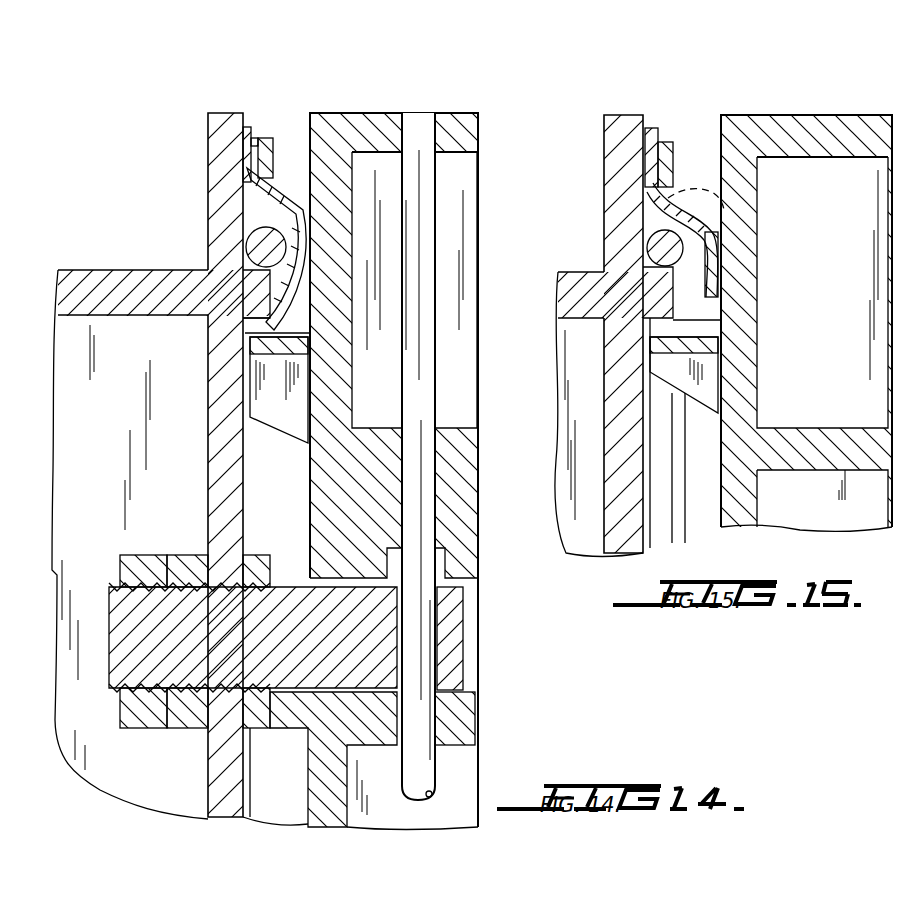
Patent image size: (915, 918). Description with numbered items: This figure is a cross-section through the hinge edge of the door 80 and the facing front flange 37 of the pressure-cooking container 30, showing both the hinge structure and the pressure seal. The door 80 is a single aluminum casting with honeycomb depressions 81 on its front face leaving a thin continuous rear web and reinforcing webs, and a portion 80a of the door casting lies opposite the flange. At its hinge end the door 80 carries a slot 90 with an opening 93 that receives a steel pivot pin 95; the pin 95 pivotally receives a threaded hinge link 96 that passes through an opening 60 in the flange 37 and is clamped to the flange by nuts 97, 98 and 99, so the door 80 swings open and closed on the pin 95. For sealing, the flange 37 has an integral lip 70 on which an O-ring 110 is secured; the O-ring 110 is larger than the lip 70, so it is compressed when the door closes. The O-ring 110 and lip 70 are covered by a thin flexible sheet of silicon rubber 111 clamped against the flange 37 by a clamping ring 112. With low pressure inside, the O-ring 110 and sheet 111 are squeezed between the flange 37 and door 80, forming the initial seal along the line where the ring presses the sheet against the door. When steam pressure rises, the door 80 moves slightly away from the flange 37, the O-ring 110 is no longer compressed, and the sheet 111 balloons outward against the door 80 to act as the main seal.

In FIG. 14, the container 30 is at (122, 270).
In FIG. 15, the container 30 is at (560, 298).
In FIG. 14, the front flange 37 is at (208, 170).
In FIG. 15, the front flange 37 is at (604, 195).
In FIG. 14, the opening 60 is at (190, 595).
In FIG. 14, the lip 70 is at (247, 320).
In FIG. 15, the lip 70 is at (690, 327).
In FIG. 14, the door 80 is at (500, 193).
In FIG. 15, the door 80 is at (782, 111).
In FIG. 14, the housing portion 80a is at (282, 360).
In FIG. 15, the housing portion 80a is at (705, 357).
In FIG. 14, the depressions 81 is at (457, 428).
In FIG. 15, the depressions 81 is at (853, 160).
In FIG. 14, the slot 90 is at (317, 695).
In FIG. 14, the opening 93 is at (432, 726).
In FIG. 14, the steel pivot pin 95 is at (435, 293).
In FIG. 14, the threaded hinge link 96 is at (299, 649).
In FIG. 14, the nut 97 is at (250, 728).
In FIG. 14, the nut 98 is at (195, 728).
In FIG. 14, the nut 99 is at (148, 728).
In FIG. 14, the O-ring 110 is at (246, 252).
In FIG. 15, the O-ring 110 is at (647, 252).
In FIG. 14, the flexible sheet of silicon rubber 111 is at (300, 212).
In FIG. 15, the flexible sheet of silicon rubber 111 is at (717, 242).
In FIG. 14, the clamping ring 112 is at (267, 138).
In FIG. 15, the clamping ring 112 is at (662, 142).